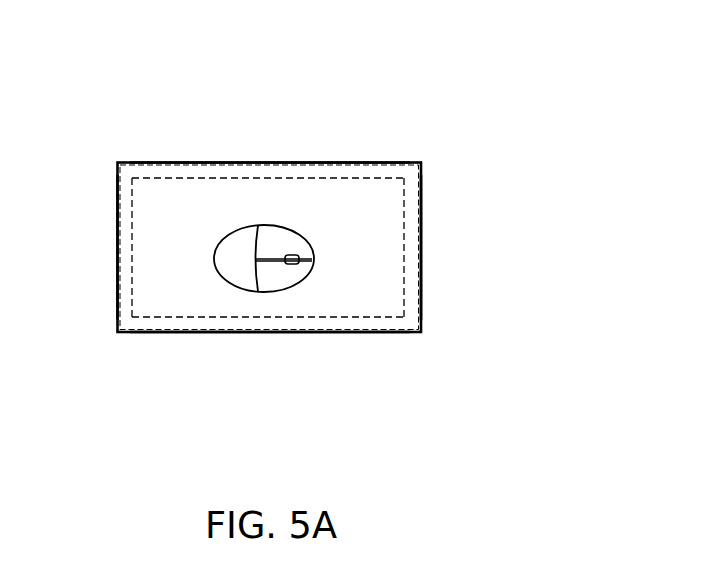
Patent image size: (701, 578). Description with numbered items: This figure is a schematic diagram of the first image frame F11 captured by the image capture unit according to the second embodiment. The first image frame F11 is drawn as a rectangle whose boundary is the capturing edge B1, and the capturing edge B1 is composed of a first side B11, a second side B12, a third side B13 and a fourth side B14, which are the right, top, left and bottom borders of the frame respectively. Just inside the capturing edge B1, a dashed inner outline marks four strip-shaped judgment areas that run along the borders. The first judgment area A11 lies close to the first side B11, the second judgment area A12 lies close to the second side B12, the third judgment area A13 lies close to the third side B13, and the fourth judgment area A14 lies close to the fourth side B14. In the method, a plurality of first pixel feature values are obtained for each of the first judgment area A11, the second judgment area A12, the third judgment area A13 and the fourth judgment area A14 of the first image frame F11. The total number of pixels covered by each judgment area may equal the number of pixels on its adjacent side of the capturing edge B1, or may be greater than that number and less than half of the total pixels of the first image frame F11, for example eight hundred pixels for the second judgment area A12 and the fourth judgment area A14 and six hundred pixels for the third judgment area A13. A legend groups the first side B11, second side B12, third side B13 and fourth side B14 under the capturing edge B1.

The first image frame F11 is at (154, 150).
The first judgment area A11 is at (405, 193).
The second judgment area A12 is at (333, 178).
The third judgment area A13 is at (132, 203).
The fourth judgment area A14 is at (205, 317).
The capturing edge B1 is at (545, 10).
The first side B11 is at (422, 243).
The second side B12 is at (266, 162).
The third side B13 is at (117, 267).
The fourth side B14 is at (268, 333).